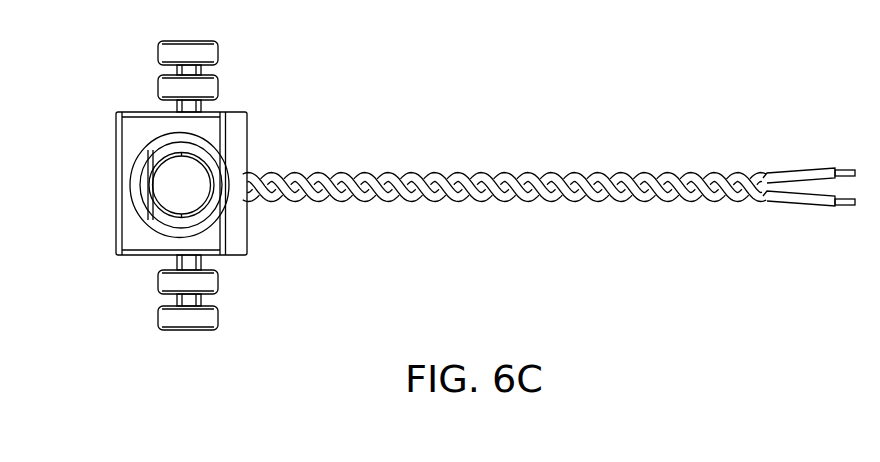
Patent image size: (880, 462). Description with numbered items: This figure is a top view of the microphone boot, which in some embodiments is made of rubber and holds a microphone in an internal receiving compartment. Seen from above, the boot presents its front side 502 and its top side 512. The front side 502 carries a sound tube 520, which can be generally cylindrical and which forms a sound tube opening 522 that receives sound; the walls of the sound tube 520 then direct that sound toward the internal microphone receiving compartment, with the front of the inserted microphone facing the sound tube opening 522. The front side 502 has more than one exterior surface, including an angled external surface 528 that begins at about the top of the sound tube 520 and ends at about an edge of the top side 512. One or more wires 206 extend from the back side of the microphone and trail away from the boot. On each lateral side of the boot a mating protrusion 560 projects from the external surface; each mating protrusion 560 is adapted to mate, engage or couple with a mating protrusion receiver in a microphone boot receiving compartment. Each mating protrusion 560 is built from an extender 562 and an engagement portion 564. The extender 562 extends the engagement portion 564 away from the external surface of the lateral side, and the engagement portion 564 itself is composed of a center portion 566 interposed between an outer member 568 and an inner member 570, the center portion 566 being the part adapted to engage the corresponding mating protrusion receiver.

The wires 206 is at (428, 173).
The front side 502 is at (135, 132).
The top side 512 is at (236, 171).
The sound tube 520 is at (221, 193).
The sound tube opening 522 is at (182, 174).
The angled external surface 528 is at (220, 233).
The mating protrusion 560 is at (189, 76).
The extender 562 is at (177, 261).
The engagement portion 564 is at (149, 41).
The center portion 566 is at (172, 298).
The outer member 568 is at (218, 315).
The inner member 570 is at (218, 280).